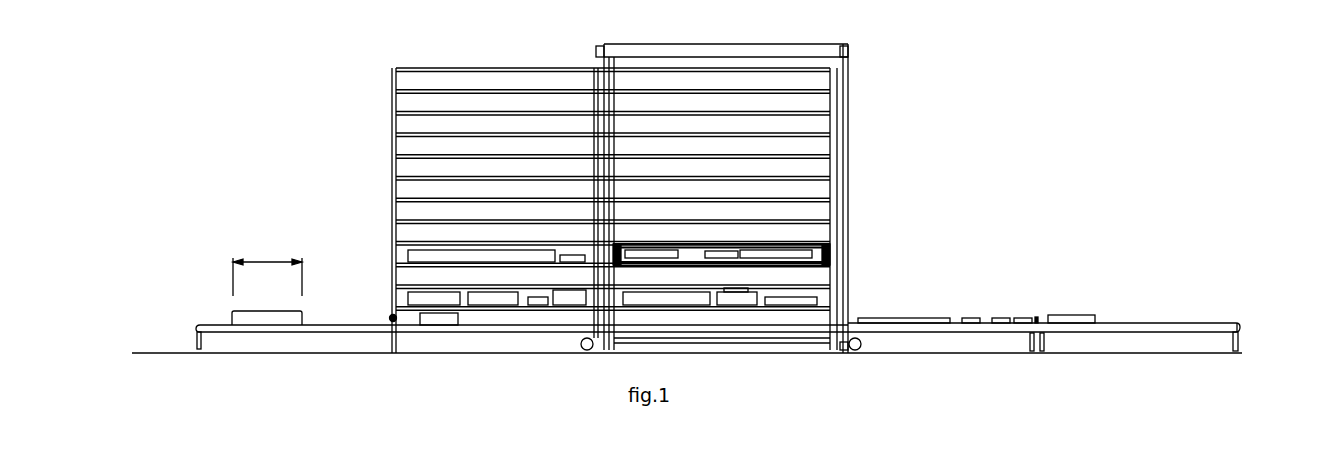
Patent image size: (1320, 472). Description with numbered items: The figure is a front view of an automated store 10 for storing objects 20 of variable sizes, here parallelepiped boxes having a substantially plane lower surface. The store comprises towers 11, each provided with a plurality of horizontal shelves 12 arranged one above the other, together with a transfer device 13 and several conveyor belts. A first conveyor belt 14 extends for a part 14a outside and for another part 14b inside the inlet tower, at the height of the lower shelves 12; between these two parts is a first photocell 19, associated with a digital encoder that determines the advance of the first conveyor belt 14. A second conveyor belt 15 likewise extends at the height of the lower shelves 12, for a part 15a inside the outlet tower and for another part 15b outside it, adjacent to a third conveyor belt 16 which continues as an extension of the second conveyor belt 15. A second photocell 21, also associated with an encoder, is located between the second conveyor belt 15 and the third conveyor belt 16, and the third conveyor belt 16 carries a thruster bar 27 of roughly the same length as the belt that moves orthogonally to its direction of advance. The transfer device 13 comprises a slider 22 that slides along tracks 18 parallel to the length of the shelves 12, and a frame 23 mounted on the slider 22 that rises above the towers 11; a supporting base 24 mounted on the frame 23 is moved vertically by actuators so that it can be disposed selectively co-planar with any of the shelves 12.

The automated store 10 is at (992, 146).
The tower 11 is at (376, 101).
The horizontal shelf 12 is at (410, 177).
The transfer device 13 is at (855, 140).
The first conveyor belt 14 is at (228, 336).
The part of first conveyor belt outside inlet tower 14a is at (312, 333).
The part of first conveyor belt inside inlet tower 14b is at (503, 330).
The second conveyor belt 15 is at (997, 337).
The part of second conveyor belt inside outlet tower 15a is at (813, 325).
The part of second conveyor belt outside outlet tower 15b is at (932, 325).
The third conveyor belt 16 is at (1240, 333).
The track 18 is at (368, 353).
The first photocell 19 is at (396, 321).
The object 20 is at (303, 318).
The second photocell 21 is at (1040, 314).
The slider 22 is at (758, 343).
The frame 23 is at (845, 294).
The supporting base 24 is at (833, 254).
The thruster bar 27 is at (1215, 323).